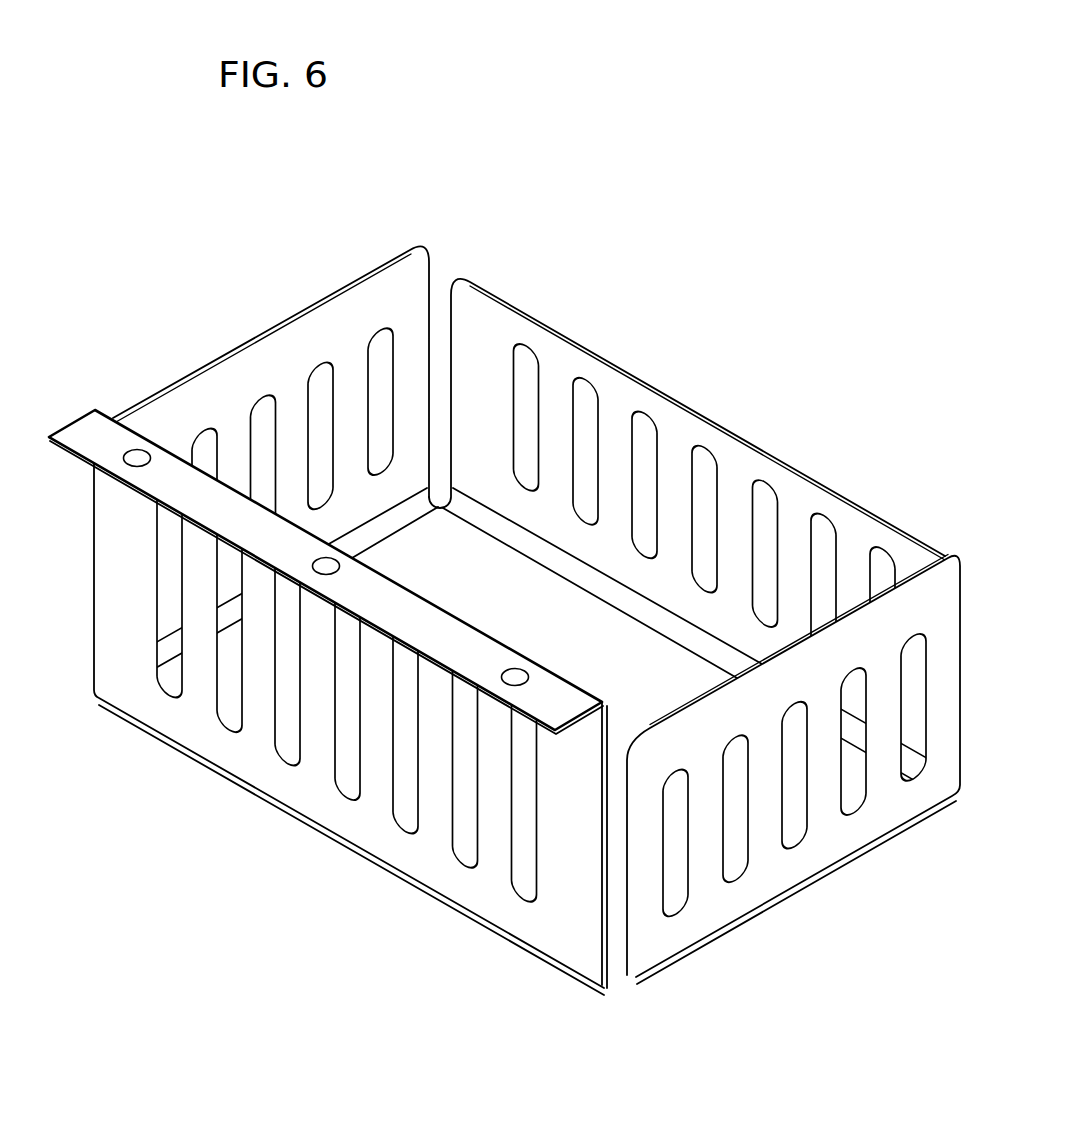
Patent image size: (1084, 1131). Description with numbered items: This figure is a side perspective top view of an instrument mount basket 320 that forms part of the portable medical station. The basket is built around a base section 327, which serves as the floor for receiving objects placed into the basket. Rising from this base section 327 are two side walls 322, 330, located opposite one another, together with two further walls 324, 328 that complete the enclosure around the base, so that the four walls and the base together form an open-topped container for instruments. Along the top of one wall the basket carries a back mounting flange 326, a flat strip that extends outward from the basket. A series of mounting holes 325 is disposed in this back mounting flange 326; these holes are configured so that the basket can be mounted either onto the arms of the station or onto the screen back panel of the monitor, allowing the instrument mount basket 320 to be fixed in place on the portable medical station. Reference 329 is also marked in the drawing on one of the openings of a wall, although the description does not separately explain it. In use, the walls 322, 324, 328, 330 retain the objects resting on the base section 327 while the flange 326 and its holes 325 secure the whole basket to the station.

The instrument mount basket 320 is at (523, 205).
The side wall 322 is at (267, 328).
The wall 324 is at (545, 318).
The mounting holes 325 is at (127, 448).
The back mounting flange 326 is at (163, 578).
The base section 327 is at (540, 585).
The wall 328 is at (327, 705).
The slot opening 329 is at (404, 790).
The side wall 330 is at (748, 708).